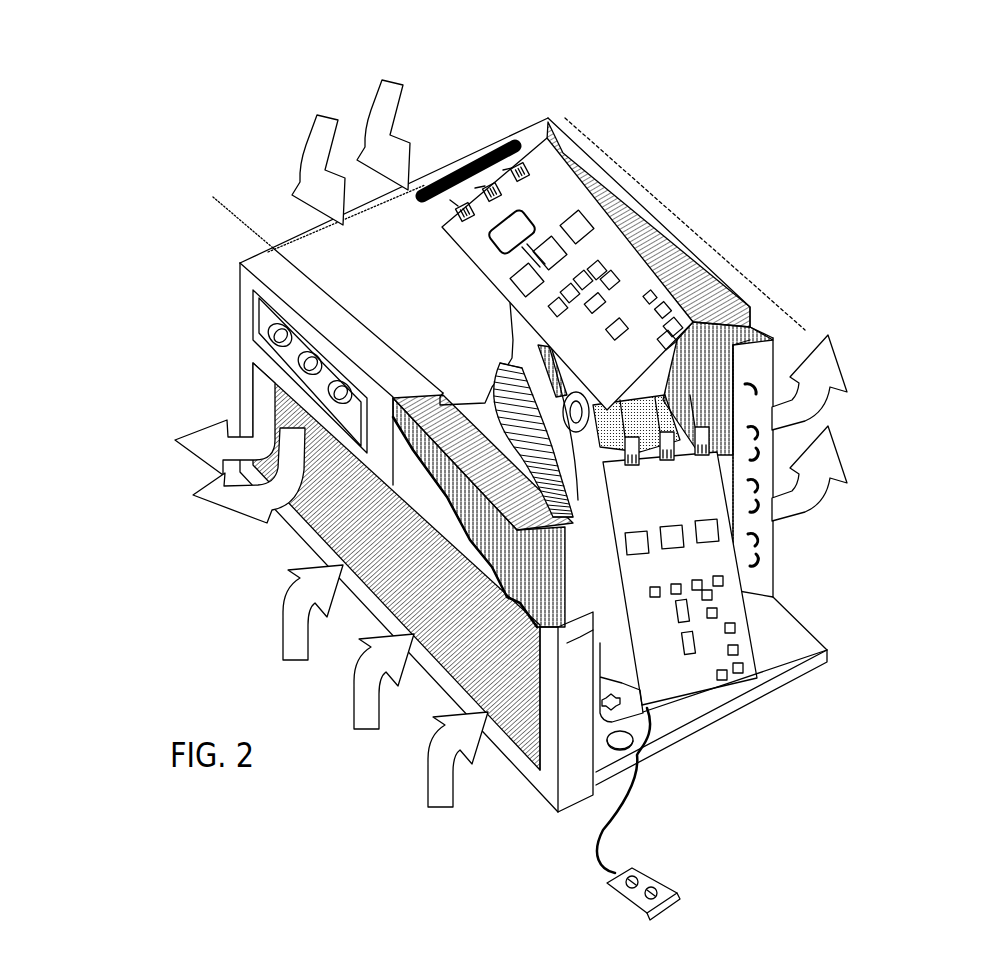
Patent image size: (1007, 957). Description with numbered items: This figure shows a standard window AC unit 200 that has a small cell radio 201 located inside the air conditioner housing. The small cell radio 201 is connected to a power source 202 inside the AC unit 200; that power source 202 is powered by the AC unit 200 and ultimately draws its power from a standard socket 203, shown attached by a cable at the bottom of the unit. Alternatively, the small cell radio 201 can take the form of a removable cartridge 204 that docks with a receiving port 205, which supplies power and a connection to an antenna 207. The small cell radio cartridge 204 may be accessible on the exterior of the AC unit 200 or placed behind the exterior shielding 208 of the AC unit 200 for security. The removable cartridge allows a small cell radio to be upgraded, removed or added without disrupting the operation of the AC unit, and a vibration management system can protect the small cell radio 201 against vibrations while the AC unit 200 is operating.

The window AC unit 200 is at (176, 328).
The small cell radio 201 is at (697, 675).
The power source 202 is at (633, 745).
The standard socket 203 is at (663, 882).
The removable cartridge 204 is at (540, 193).
The receiving port 205 is at (460, 138).
The antenna 207 is at (536, 226).
The exterior shielding 208 is at (336, 271).